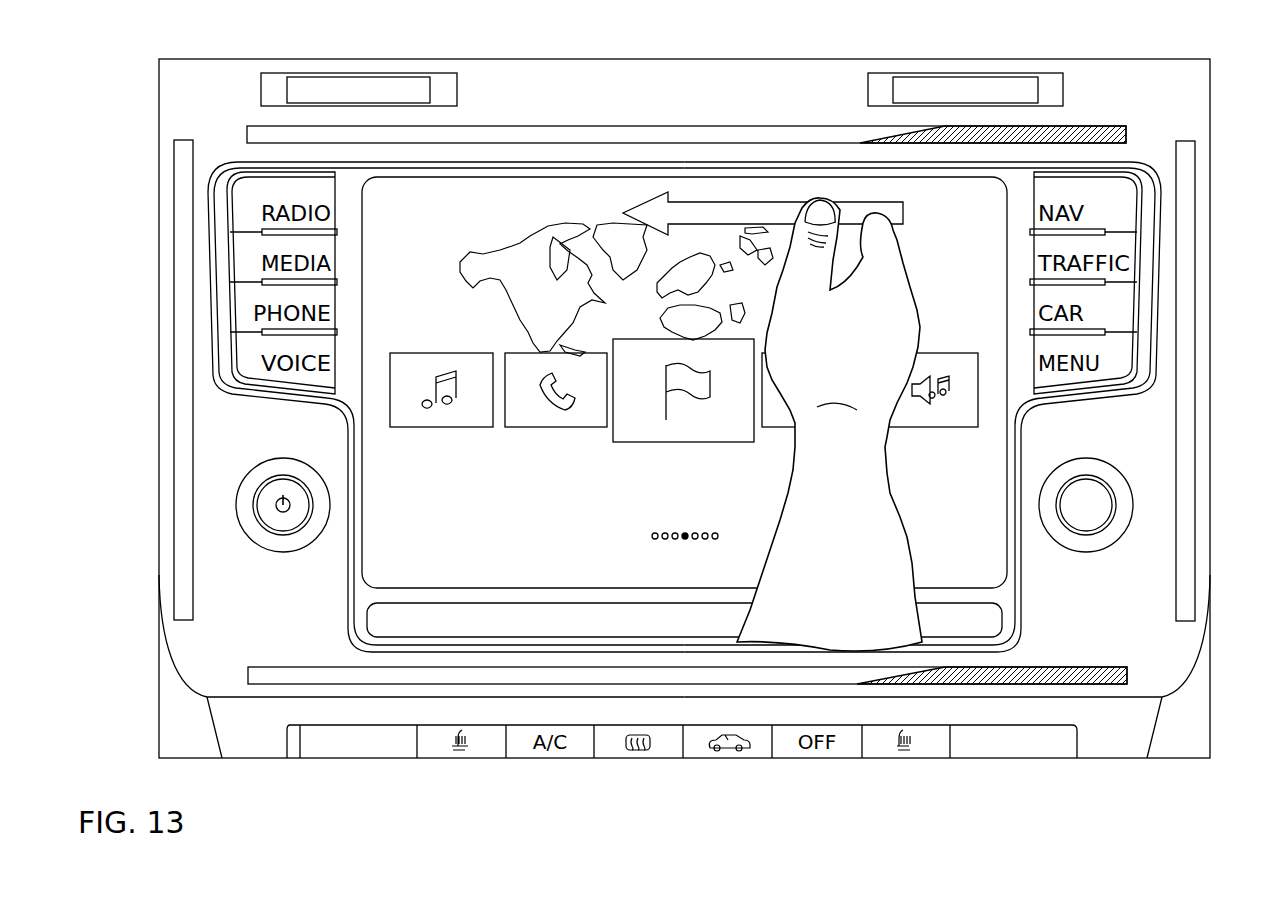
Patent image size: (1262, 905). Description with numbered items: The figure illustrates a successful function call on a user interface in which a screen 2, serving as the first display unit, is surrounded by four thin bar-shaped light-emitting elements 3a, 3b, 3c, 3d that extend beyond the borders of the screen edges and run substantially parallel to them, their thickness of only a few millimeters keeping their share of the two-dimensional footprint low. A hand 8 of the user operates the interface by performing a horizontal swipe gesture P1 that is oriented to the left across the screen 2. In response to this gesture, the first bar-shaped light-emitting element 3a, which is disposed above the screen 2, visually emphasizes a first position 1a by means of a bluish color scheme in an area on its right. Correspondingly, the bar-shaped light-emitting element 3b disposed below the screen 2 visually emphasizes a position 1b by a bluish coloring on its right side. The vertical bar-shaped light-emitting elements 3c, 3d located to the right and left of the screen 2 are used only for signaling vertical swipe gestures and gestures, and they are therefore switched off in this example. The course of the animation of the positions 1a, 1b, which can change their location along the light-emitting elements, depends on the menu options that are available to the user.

The first position 1a is at (1107, 134).
The position 1b is at (1049, 677).
The screen 2 is at (488, 182).
The first bar-shaped light-emitting element 3a is at (593, 134).
The bar-shaped light-emitting element 3b is at (381, 677).
The bar-shaped light-emitting element 3c is at (1185, 389).
The bar-shaped light-emitting element 3d is at (183, 388).
The hand 8 is at (829, 424).
The horizontal swipe gesture P1 is at (705, 213).